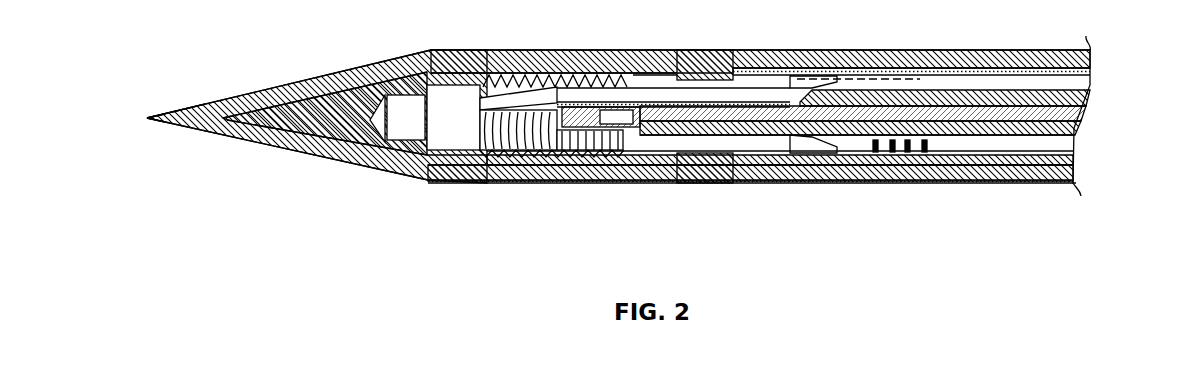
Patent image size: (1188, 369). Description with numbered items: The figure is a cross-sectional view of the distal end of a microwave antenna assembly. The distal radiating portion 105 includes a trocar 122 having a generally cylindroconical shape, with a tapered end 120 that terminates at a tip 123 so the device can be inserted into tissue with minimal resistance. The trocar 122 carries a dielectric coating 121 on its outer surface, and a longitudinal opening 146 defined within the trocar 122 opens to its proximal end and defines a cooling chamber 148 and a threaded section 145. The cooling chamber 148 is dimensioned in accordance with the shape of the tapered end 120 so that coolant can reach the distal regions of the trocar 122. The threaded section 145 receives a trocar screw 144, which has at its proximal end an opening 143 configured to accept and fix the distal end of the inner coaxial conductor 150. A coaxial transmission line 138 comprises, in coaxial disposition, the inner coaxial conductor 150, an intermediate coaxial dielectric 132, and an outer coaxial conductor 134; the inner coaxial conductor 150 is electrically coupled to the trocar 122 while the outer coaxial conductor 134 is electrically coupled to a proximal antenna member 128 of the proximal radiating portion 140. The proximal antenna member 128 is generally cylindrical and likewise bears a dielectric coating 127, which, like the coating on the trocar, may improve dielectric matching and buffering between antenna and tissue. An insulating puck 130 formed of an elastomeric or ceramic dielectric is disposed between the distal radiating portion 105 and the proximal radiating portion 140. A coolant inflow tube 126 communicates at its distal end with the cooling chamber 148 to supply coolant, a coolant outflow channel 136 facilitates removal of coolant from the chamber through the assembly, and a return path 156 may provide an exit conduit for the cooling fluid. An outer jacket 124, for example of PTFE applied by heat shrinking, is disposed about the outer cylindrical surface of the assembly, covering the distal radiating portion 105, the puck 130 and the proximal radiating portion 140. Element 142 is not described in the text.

The distal radiating portion 105 is at (489, 208).
The tapered end 120 is at (282, 156).
The dielectric coating 121 is at (190, 106).
The trocar 122 is at (305, 82).
The tip 123 is at (147, 118).
The outer jacket 124 is at (687, 64).
The coolant inflow tube 126 is at (640, 93).
The dielectric coating 127 is at (1037, 50).
The proximal antenna member 128 is at (758, 64).
The insulating puck 130 is at (703, 183).
The intermediate coaxial dielectric 132 is at (933, 100).
The outer coaxial conductor 134 is at (980, 143).
The coolant outflow channel 136 is at (757, 145).
The coaxial transmission line 138 is at (1095, 97).
The proximal radiating portion 140 is at (896, 223).
The seal block 142 is at (603, 183).
The opening 143 is at (613, 115).
The trocar screw 144 is at (530, 183).
The threaded section 145 is at (482, 168).
The longitudinal opening 146 is at (462, 110).
The cooling chamber 148 is at (410, 117).
The inner coaxial conductor 150 is at (832, 127).
The return path 156 is at (1063, 147).